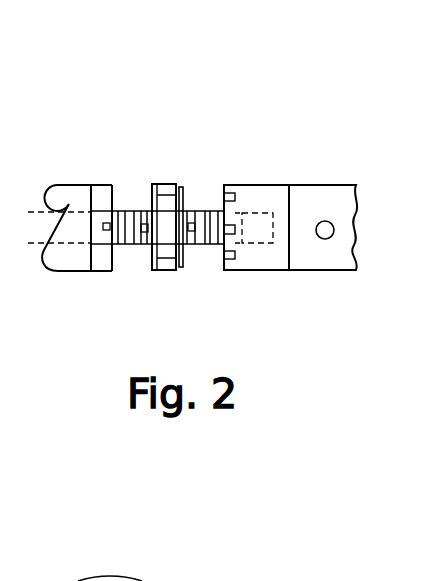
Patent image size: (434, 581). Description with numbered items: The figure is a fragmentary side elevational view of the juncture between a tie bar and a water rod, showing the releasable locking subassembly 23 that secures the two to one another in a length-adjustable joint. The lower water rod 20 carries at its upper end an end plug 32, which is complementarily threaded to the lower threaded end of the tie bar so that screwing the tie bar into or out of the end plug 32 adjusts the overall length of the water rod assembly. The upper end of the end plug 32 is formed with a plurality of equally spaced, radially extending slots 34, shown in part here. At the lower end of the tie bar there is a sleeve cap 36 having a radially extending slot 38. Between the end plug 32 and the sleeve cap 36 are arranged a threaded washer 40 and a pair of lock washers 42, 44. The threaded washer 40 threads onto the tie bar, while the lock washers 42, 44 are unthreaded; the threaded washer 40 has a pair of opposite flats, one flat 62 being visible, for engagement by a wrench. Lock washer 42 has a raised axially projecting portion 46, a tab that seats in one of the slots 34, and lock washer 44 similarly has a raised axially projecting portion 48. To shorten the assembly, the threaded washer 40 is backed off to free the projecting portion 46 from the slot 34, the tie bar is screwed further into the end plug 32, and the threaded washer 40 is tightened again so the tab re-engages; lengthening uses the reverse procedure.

The releasable locking subassembly 23 is at (190, 80).
The lower water rod 20 is at (318, 270).
The end plug 32 is at (258, 271).
The radially extending slots 34 is at (222, 229).
The sleeve cap 36 is at (97, 268).
The radially extending slot 38 is at (113, 230).
The threaded washer 40 is at (165, 184).
The lock washer 42 is at (182, 197).
The lock washer 44 is at (144, 224).
The raised axially projecting portion 46 is at (193, 241).
The raised axially projecting portion 48 is at (151, 186).
The flat 62 is at (184, 207).